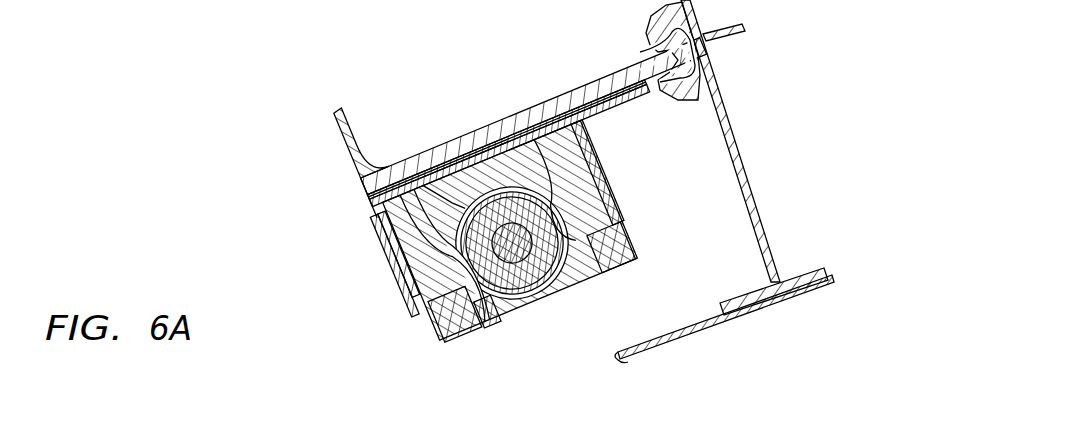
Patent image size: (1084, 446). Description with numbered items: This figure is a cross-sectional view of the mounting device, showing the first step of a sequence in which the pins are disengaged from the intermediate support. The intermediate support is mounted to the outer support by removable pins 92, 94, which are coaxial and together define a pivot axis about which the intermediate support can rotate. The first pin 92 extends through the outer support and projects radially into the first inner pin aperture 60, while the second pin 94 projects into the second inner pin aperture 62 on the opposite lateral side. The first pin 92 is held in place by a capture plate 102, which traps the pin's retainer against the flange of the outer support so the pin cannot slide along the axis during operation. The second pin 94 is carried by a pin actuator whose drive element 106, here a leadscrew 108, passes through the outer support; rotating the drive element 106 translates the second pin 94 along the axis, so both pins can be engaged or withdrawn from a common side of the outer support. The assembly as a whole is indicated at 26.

The spindle assembly 26 is at (430, 351).
The first inner pin aperture 60 is at (468, 323).
The second inner pin aperture 62 is at (602, 256).
The first pin 92 is at (411, 298).
The second pin 94 is at (614, 204).
The capture plate 102 is at (389, 242).
The drive element 106 is at (394, 214).
The leadscrew 108 is at (506, 139).